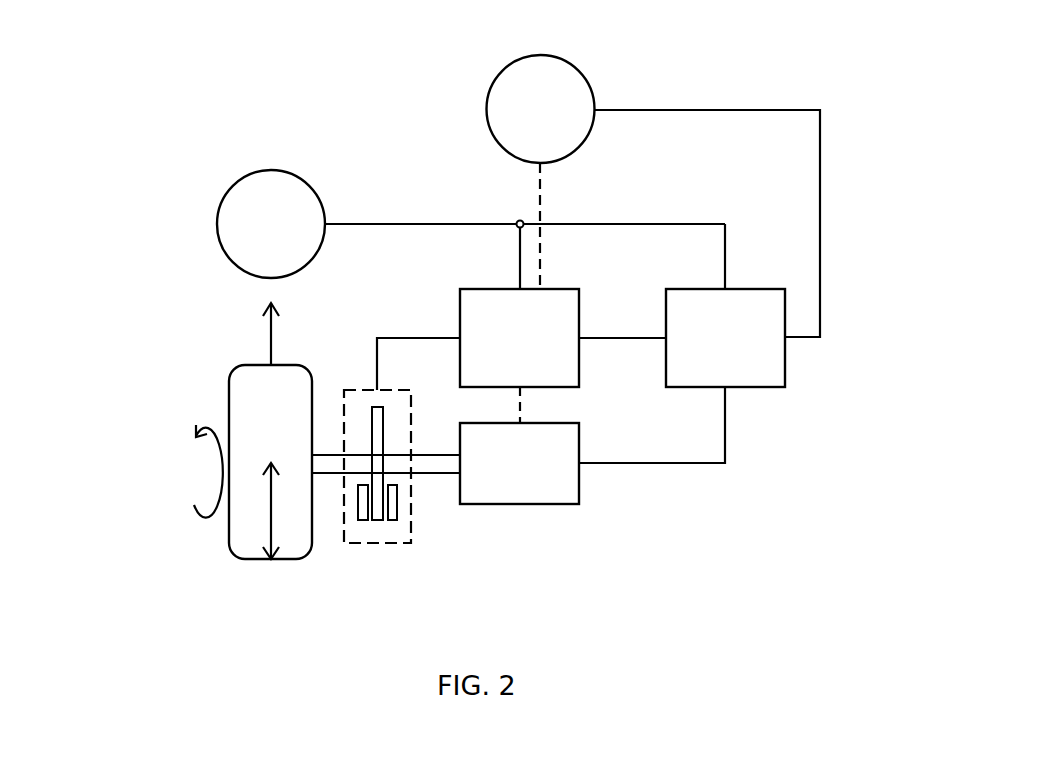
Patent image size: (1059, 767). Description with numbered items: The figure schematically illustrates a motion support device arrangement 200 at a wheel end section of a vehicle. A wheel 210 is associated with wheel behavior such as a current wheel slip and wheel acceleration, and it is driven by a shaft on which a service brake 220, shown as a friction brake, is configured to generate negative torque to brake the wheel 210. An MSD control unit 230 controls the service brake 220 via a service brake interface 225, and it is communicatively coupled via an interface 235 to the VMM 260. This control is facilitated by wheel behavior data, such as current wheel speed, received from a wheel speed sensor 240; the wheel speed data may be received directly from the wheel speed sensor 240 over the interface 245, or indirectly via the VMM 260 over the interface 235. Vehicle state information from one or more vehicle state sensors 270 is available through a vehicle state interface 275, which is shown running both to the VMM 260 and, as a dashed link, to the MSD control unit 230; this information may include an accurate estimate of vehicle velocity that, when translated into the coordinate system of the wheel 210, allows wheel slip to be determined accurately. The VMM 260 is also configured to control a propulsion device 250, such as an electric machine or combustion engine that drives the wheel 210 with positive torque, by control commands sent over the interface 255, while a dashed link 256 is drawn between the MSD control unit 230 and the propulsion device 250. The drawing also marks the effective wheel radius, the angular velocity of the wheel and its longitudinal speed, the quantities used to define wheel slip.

The vehicle propulsion control system 200 is at (116, 63).
The wheel 210 is at (248, 365).
The service brake 220 is at (395, 545).
The service brake interface 225 is at (418, 353).
The MSD control unit 230 is at (519, 338).
The interface 235 is at (622, 327).
The wheel speed sensor 240 is at (271, 224).
The interface 245 is at (525, 245).
The propulsion device 250 is at (519, 463).
The interface 255 is at (652, 425).
The signal line between MSD controller and propulsion unit 256 is at (537, 405).
The VMM 260 is at (725, 338).
The vehicle state sensors 270 is at (541, 109).
The vehicle state interface 275 is at (680, 211).